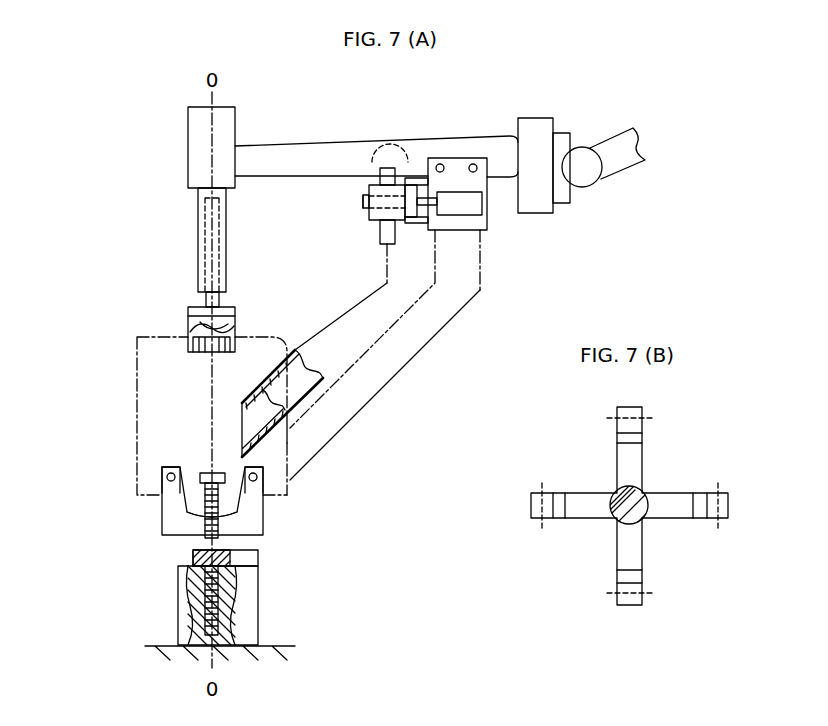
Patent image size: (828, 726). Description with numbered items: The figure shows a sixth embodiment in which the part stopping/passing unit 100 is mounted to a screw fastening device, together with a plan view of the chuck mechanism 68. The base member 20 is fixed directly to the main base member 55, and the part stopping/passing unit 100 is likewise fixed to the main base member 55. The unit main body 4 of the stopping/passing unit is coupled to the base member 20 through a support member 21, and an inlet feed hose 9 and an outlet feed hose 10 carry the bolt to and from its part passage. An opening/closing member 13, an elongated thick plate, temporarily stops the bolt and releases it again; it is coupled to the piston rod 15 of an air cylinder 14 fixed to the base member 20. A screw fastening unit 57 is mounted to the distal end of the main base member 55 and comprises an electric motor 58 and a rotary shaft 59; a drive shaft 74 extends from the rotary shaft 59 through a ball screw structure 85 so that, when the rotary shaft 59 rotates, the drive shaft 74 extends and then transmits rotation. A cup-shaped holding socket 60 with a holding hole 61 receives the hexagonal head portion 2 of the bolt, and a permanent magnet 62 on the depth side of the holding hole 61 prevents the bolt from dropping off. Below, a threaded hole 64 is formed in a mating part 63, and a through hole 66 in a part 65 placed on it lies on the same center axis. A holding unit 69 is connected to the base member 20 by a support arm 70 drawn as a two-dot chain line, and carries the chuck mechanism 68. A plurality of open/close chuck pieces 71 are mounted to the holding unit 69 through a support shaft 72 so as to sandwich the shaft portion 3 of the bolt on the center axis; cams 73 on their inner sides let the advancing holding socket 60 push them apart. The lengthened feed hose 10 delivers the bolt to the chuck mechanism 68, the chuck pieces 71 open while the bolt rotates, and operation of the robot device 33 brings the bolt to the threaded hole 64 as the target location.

In FIG. 7A, the head portion 2 is at (210, 470).
In FIG. 7A, the shaft portion 3 is at (222, 508).
In FIG. 7B, the shaft portion 3 is at (645, 508).
In FIG. 7A, the unit main body 4 is at (360, 190).
In FIG. 7A, the feed hose 9 is at (373, 152).
In FIG. 7A, the feed hose 10 is at (383, 244).
In FIG. 7A, the opening/closing member 13 is at (363, 200).
In FIG. 7A, the air cylinder 14 is at (478, 205).
In FIG. 7A, the piston rod 15 is at (430, 205).
In FIG. 7A, the base member 20 is at (465, 158).
In FIG. 7A, the support member 21 is at (415, 178).
In FIG. 7A, the robot device 33 is at (590, 143).
In FIG. 7A, the main base member 55 is at (297, 146).
In FIG. 7A, the screw fastening unit 57 is at (170, 251).
In FIG. 7A, the electric motor 58 is at (188, 145).
In FIG. 7A, the rotary shaft 59 is at (198, 228).
In FIG. 7A, the holding socket 60 is at (235, 320).
In FIG. 7A, the holding hole 61 is at (203, 350).
In FIG. 7A, the permanent magnet 62 is at (195, 325).
In FIG. 7A, the mating part 63 is at (258, 610).
In FIG. 7A, the threaded hole 64 is at (205, 603).
In FIG. 7A, the part 65 is at (258, 558).
In FIG. 7A, the through hole 66 is at (193, 556).
In FIG. 7A, the chuck mechanism 68 is at (148, 465).
In FIG. 7B, the chuck mechanism 68 is at (695, 472).
In FIG. 7A, the holding unit 69 is at (292, 437).
In FIG. 7A, the support arm 70 is at (437, 334).
In FIG. 7A, the chuck pieces 71 is at (162, 520).
In FIG. 7B, the chuck pieces 71 is at (617, 463).
In FIG. 7A, the support shaft 72 is at (163, 478).
In FIG. 7B, the support shaft 72 is at (646, 417).
In FIG. 7A, the cams 73 is at (180, 468).
In FIG. 7B, the cams 73 is at (642, 438).
In FIG. 7A, the drive shaft 74 is at (220, 300).
In FIG. 7A, the ball screw structure 85 is at (222, 235).
In FIG. 7A, the part stopping/passing unit 100 is at (362, 226).